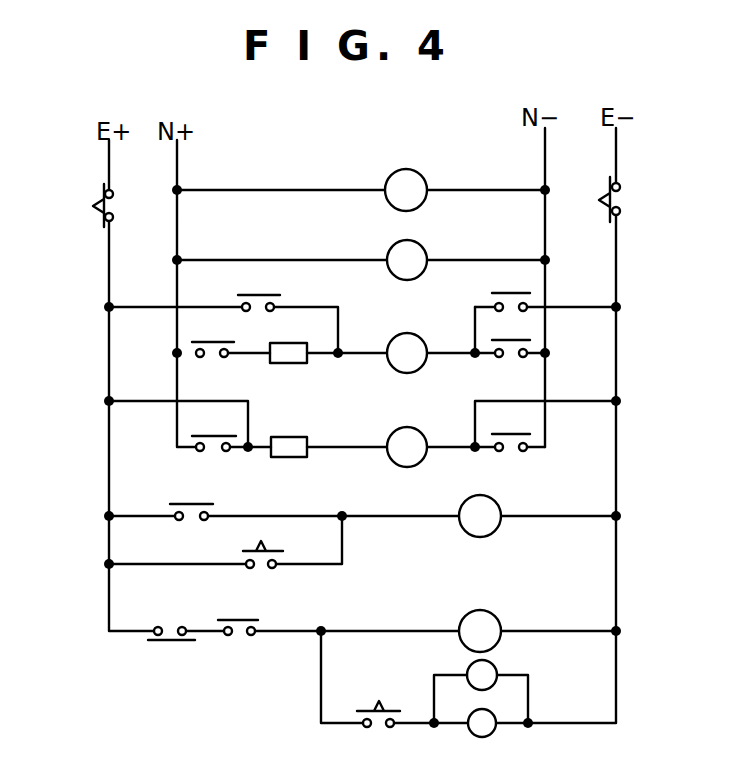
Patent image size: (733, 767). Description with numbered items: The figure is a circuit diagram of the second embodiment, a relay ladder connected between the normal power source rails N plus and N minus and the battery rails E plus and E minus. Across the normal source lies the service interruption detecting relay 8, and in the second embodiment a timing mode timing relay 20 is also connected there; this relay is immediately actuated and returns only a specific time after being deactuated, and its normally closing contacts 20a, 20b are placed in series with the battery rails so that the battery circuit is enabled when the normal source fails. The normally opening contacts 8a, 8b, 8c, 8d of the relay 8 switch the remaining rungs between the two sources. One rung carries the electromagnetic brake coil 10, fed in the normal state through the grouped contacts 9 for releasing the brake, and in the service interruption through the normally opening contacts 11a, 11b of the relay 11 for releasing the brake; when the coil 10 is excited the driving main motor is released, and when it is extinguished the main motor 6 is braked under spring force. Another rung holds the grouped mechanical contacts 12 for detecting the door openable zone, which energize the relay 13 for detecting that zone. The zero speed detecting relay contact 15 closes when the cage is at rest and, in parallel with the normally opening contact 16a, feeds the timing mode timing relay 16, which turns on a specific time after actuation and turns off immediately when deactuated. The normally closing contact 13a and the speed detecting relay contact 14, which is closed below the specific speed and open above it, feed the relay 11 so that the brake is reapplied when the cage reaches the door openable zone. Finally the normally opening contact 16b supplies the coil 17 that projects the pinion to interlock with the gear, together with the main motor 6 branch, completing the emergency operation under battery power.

The motor 6 is at (490, 736).
The service interruption detecting relay 8 is at (421, 247).
The normally opening contact 8a is at (212, 342).
The normally opening contact 8b is at (520, 340).
The normally opening contact 8c is at (212, 436).
The normally opening contact 8d is at (520, 434).
The grouped contacts for releasing a brake in the normal state 9 is at (300, 331).
The electromagnetic brake coil 10 is at (428, 330).
The relay for releasing the brake in the service interruption 11 is at (494, 616).
The normally opening contact 11a is at (266, 297).
The normally opening contact 11b is at (504, 292).
The grouped mechanical contacts for detecting a door openable zone 12 is at (294, 437).
The relay for detecting the door openable zone 13 is at (421, 433).
The normally closing contact 13a is at (168, 628).
The speed detecting relay contact 14 is at (243, 620).
The zero speed detecting relay contact 15 is at (199, 504).
The timing mode timing relay 16 is at (504, 492).
The normally opening contact 16a is at (275, 548).
The normally opening contact 16b is at (379, 710).
The coil for projecting the pinion 17 is at (494, 666).
The timing mode timing relay 20 is at (420, 174).
The normally closing contact 20a is at (102, 200).
The normally closing contact 20b is at (620, 197).